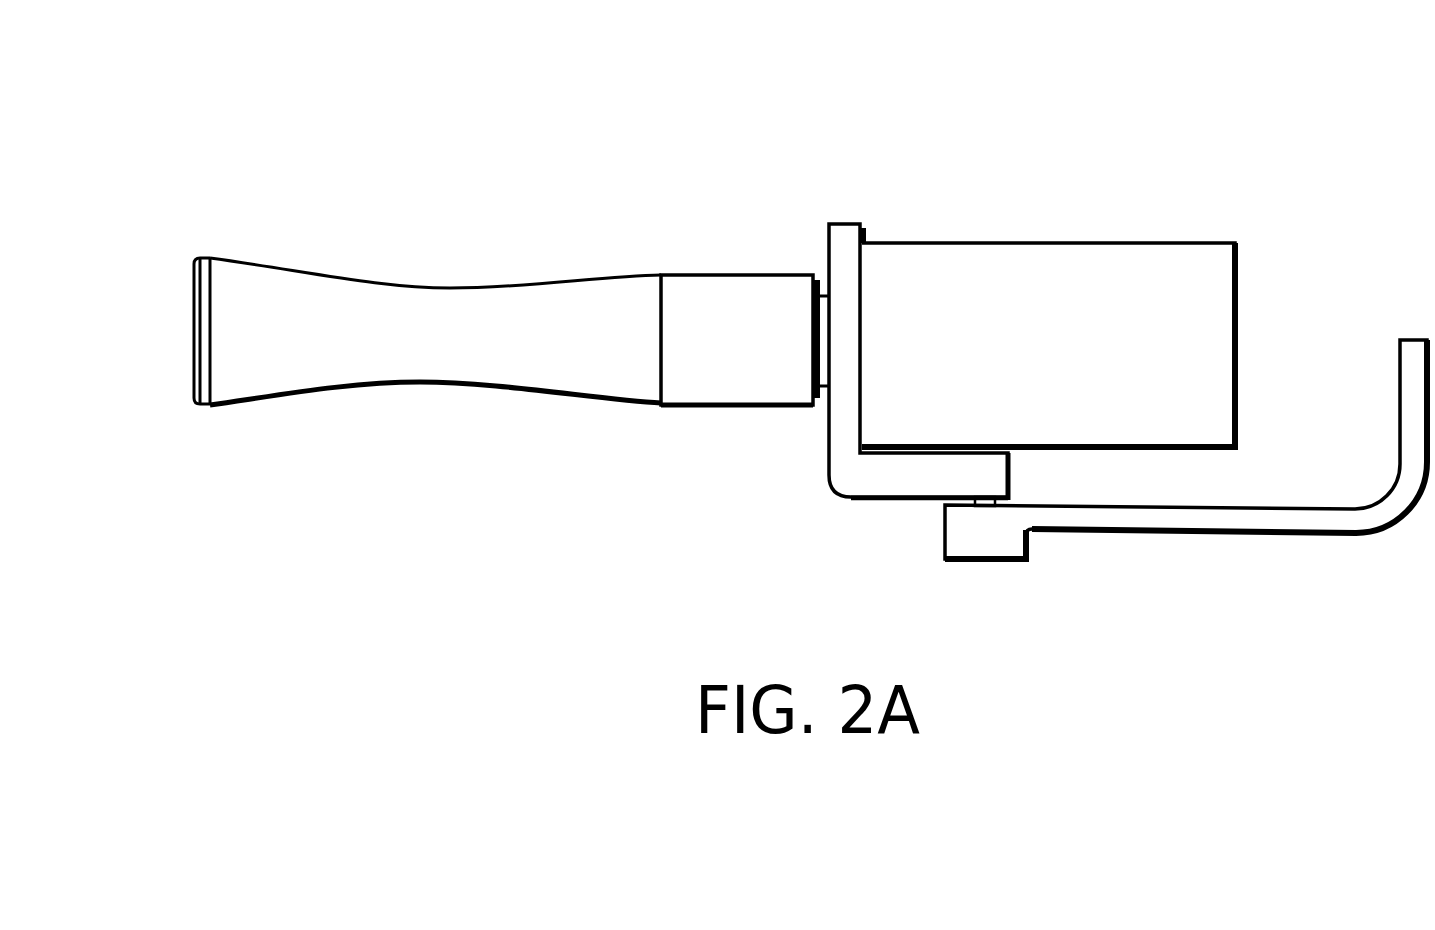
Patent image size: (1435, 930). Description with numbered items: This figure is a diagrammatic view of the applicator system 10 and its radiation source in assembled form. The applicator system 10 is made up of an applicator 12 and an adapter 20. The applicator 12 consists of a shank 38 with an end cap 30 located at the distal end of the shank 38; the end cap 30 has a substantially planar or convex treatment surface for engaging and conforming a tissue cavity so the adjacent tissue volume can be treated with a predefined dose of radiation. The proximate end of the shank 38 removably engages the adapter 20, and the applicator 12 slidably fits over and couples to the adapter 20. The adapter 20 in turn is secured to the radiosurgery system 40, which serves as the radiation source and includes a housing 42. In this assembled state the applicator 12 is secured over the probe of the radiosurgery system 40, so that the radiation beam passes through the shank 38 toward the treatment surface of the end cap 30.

The applicator system 10 is at (625, 72).
The applicator 12 is at (533, 425).
The adapter 20 is at (838, 472).
The end cap 30 is at (193, 382).
The shank 38 is at (300, 368).
The radiosurgery system 40 is at (1085, 160).
The housing 42 is at (1190, 258).